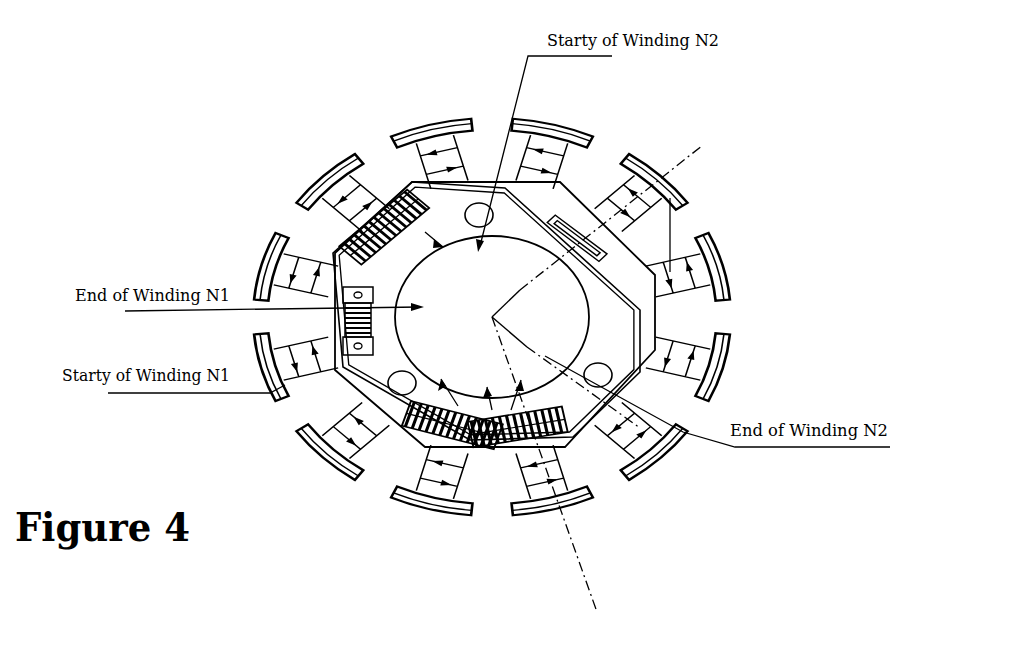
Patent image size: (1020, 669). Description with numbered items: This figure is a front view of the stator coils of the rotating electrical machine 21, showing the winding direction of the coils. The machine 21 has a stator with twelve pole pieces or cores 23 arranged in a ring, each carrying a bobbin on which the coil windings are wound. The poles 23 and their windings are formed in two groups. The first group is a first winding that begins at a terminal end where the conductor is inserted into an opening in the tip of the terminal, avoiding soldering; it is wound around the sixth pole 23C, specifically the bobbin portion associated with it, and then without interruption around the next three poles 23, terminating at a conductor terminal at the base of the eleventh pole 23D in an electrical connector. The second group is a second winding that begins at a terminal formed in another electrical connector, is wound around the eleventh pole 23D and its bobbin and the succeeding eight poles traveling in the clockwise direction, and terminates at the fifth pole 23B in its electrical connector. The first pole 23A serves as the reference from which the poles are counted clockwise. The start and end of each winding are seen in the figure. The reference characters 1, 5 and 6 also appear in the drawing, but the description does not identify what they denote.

The stator 1 is at (703, 145).
The center axis line 5 is at (596, 605).
The pole tooth 6 is at (672, 470).
The rotating electrical machine 21 is at (437, 103).
The pole pieces or cores 23 is at (265, 247).
The first pole 23A is at (610, 186).
The fifth pole 23B is at (560, 503).
The sixth pole 23C is at (437, 508).
The eleventh pole 23D is at (326, 182).